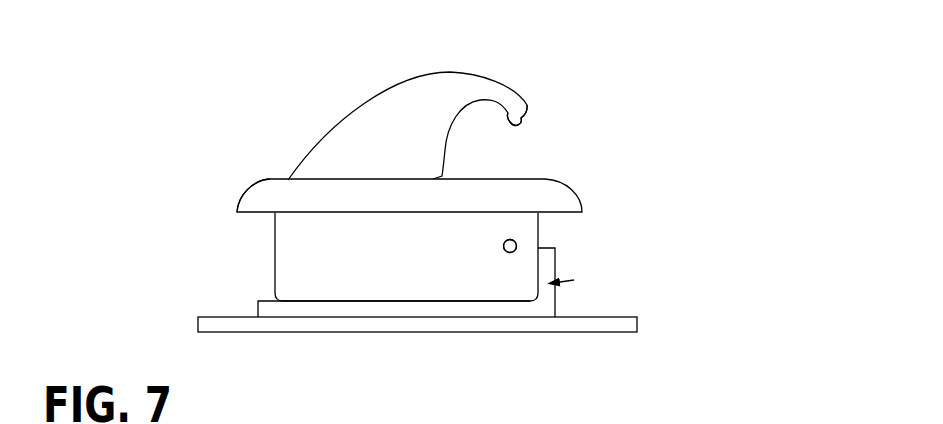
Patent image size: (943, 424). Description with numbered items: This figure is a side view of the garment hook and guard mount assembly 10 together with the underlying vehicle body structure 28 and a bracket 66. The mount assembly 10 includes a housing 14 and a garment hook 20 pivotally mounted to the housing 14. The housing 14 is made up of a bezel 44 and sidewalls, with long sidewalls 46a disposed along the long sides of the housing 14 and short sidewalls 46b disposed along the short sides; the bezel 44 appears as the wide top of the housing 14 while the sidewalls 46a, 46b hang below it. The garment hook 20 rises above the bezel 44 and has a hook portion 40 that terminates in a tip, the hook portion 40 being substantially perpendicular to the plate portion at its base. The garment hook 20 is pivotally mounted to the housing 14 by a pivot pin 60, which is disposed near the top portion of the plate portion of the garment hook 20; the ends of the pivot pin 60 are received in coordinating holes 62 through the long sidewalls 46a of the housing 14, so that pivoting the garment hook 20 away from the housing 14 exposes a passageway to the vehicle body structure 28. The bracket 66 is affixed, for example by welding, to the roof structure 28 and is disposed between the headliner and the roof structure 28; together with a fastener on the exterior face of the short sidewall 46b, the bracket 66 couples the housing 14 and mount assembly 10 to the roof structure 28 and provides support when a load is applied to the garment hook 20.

The garment hook and guard mount assembly 10 is at (706, 61).
The housing 14 is at (580, 192).
The garment hook 20 is at (342, 110).
The vehicle body structure 28 is at (362, 335).
The hook portion 40 is at (512, 88).
The bezel 44 is at (270, 180).
The long sidewall 46a is at (427, 282).
The short sidewall 46b is at (275, 255).
The pivot pin 60 is at (513, 253).
The hole 62 is at (517, 245).
The bracket 66 is at (545, 305).